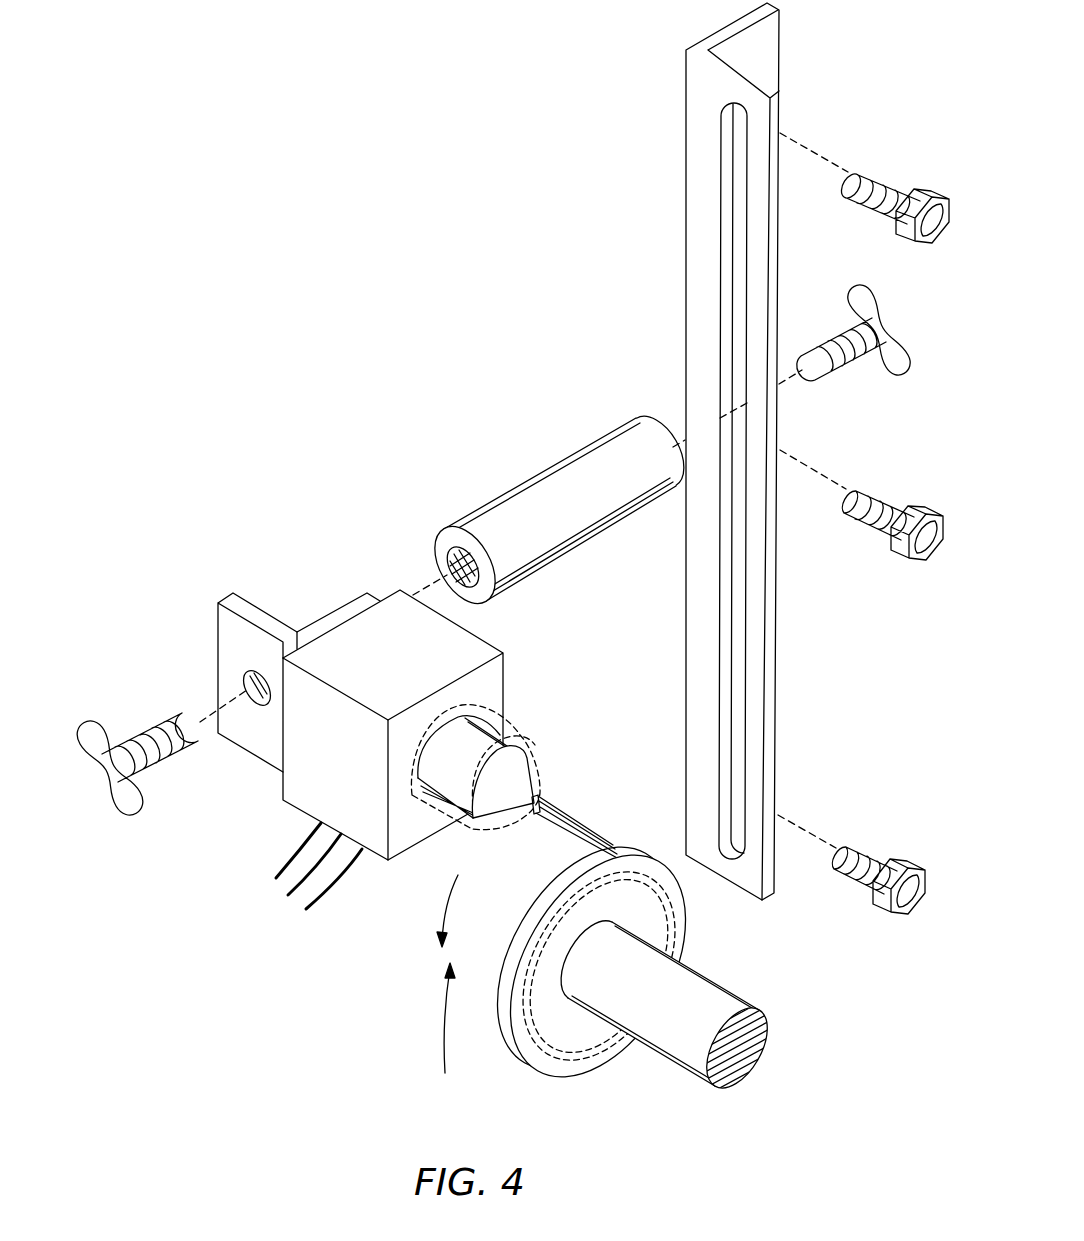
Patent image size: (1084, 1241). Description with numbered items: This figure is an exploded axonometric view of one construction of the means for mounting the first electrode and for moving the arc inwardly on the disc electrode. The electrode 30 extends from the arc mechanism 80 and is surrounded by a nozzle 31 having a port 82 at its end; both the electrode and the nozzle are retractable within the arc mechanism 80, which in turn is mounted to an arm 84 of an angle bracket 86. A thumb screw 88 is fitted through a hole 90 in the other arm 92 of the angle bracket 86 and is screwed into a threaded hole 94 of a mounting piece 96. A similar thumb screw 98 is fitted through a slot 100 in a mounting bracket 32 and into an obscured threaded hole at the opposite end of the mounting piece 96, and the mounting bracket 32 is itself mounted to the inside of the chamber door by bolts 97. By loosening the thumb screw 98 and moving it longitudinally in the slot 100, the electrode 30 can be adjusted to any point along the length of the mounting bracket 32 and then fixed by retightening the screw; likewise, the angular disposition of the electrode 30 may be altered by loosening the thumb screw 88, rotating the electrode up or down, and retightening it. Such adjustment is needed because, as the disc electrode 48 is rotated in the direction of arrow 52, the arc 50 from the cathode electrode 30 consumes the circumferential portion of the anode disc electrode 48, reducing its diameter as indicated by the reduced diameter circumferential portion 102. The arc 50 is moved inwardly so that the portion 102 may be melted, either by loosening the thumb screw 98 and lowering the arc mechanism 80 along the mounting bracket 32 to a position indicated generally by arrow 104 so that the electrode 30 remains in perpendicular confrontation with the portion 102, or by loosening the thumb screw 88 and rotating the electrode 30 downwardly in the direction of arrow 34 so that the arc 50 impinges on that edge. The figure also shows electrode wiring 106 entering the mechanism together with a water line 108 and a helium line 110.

The electrode 30 is at (499, 748).
The nozzle 31 is at (425, 797).
The mounting bracket 32 is at (730, 451).
The arrow 34 is at (449, 917).
The disc electrode 48 is at (599, 962).
The arc 50 is at (572, 822).
The arrow 52 is at (443, 1036).
The arc mechanism 80 is at (411, 728).
The port 82 is at (480, 833).
The arm 84 is at (343, 603).
The angle bracket 86 is at (314, 670).
The thumb screw 88 is at (139, 737).
The hole 90 is at (243, 690).
The arm 92 is at (239, 672).
The threaded hole 94 is at (450, 572).
The mounting piece 96 is at (543, 510).
The bolts 97 is at (892, 195).
The thumb screw 98 is at (887, 320).
The slot 100 is at (738, 190).
The reduced diameter circumferential portion 102 is at (677, 932).
The arrow 104 is at (737, 632).
The electrode wiring 106 is at (276, 878).
The water line 108 is at (288, 895).
The helium line 110 is at (306, 909).